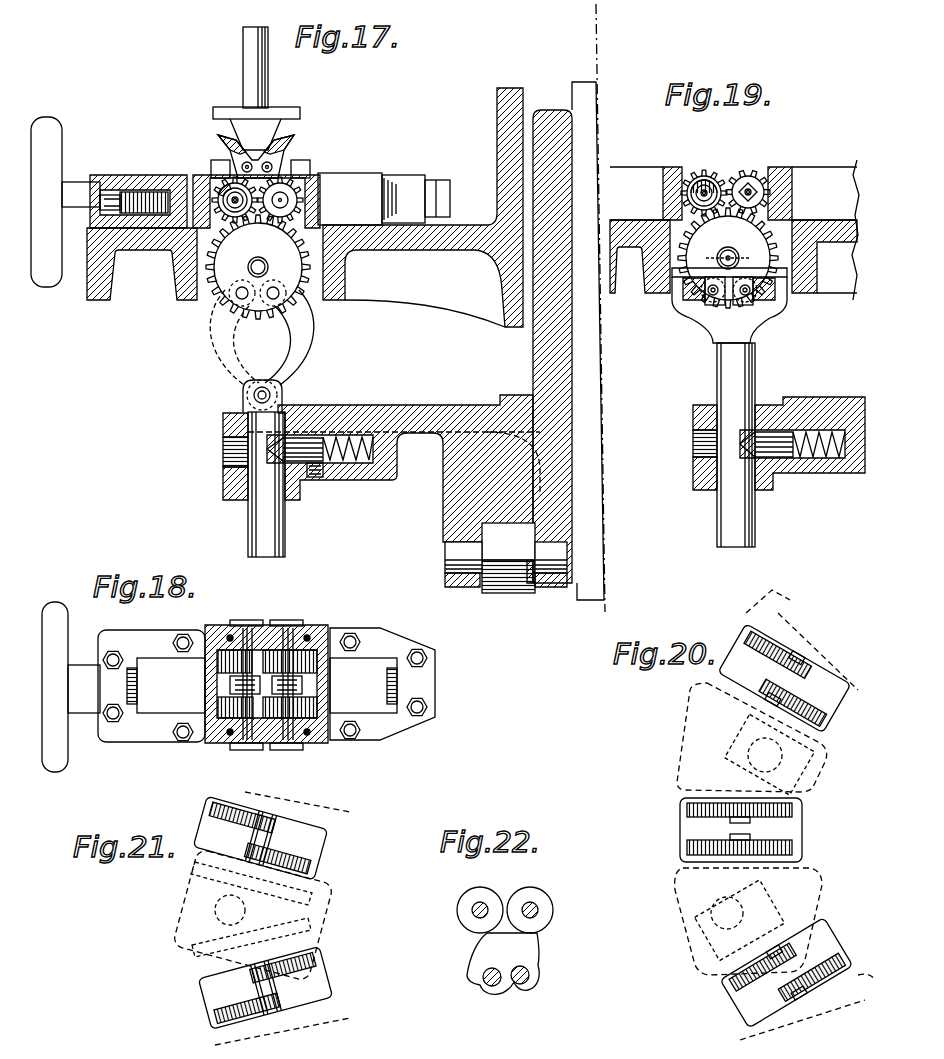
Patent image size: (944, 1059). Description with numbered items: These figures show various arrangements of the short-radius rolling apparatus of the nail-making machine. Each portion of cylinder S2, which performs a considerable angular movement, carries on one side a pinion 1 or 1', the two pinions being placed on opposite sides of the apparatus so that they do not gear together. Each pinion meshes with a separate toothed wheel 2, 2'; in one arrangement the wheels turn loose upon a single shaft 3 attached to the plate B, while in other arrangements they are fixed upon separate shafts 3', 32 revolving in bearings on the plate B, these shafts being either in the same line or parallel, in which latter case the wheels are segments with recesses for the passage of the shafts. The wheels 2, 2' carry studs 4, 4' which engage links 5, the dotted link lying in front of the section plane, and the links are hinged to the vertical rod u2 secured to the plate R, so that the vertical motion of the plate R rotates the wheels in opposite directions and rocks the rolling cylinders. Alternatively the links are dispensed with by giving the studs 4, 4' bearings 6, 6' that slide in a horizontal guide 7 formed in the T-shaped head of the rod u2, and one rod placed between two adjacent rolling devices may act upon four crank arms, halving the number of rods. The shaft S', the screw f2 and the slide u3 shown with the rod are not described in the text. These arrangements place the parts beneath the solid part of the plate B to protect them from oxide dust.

In FIG. 17, the pinion 1 is at (227, 225).
In FIG. 19, the pinion 1 is at (714, 172).
In FIG. 17, the pinion 1' is at (280, 200).
In FIG. 19, the pinion 1' is at (754, 199).
In FIG. 18, the pinion 1' is at (235, 697).
In FIG. 17, the wheel 2 is at (258, 267).
In FIG. 19, the wheel 2 is at (728, 258).
In FIG. 18, the wheel 2 is at (305, 684).
In FIG. 21, the wheel 2 is at (262, 912).
In FIG. 20, the wheel 2 is at (766, 826).
In FIG. 17, the wheel 2' is at (258, 267).
In FIG. 19, the wheel 2' is at (728, 258).
In FIG. 18, the wheel 2' is at (298, 719).
In FIG. 21, the wheel 2' is at (265, 900).
In FIG. 22, the wheel 2' is at (503, 963).
In FIG. 20, the wheel 2' is at (724, 906).
In FIG. 17, the shaft 3 is at (258, 267).
In FIG. 19, the shaft 3' is at (725, 258).
In FIG. 21, the shaft 3' is at (265, 911).
In FIG. 22, the shaft 3' is at (491, 990).
In FIG. 20, the shaft 3' is at (760, 841).
In FIG. 19, the shaft 32 is at (745, 257).
In FIG. 21, the shaft 32 is at (248, 843).
In FIG. 22, the shaft 32 is at (520, 985).
In FIG. 20, the shaft 32 is at (812, 658).
In FIG. 17, the stud 4 is at (274, 285).
In FIG. 19, the stud 4 is at (737, 312).
In FIG. 17, the stud 4' is at (240, 286).
In FIG. 19, the stud 4' is at (700, 314).
In FIG. 17, the link 5 is at (262, 351).
In FIG. 19, the bearing 6 is at (713, 301).
In FIG. 19, the bearing 6' is at (746, 300).
In FIG. 19, the horizontal guide 7 is at (683, 305).
In FIG. 21, the horizontal guide 7 is at (251, 909).
In FIG. 17, the shaft S' is at (218, 222).
In FIG. 19, the portion of cylinder S2 is at (703, 170).
In FIG. 18, the portion of cylinder S2 is at (228, 682).
In FIG. 22, the portion of cylinder S2 is at (484, 892).
In FIG. 17, the feed screw f2 is at (303, 186).
In FIG. 17, the vertical rod u2 is at (248, 517).
In FIG. 19, the vertical rod u2 is at (744, 445).
In FIG. 21, the vertical rod u2 is at (230, 910).
In FIG. 20, the vertical rod u2 is at (746, 833).
In FIG. 17, the spring slide u3 is at (312, 440).
In FIG. 17, the plate B is at (344, 263).
In FIG. 19, the plate B is at (815, 260).
In FIG. 21, the plate B is at (260, 915).
In FIG. 20, the plate B is at (758, 829).
In FIG. 17, the plate R is at (444, 494).
In FIG. 19, the plate R is at (865, 397).